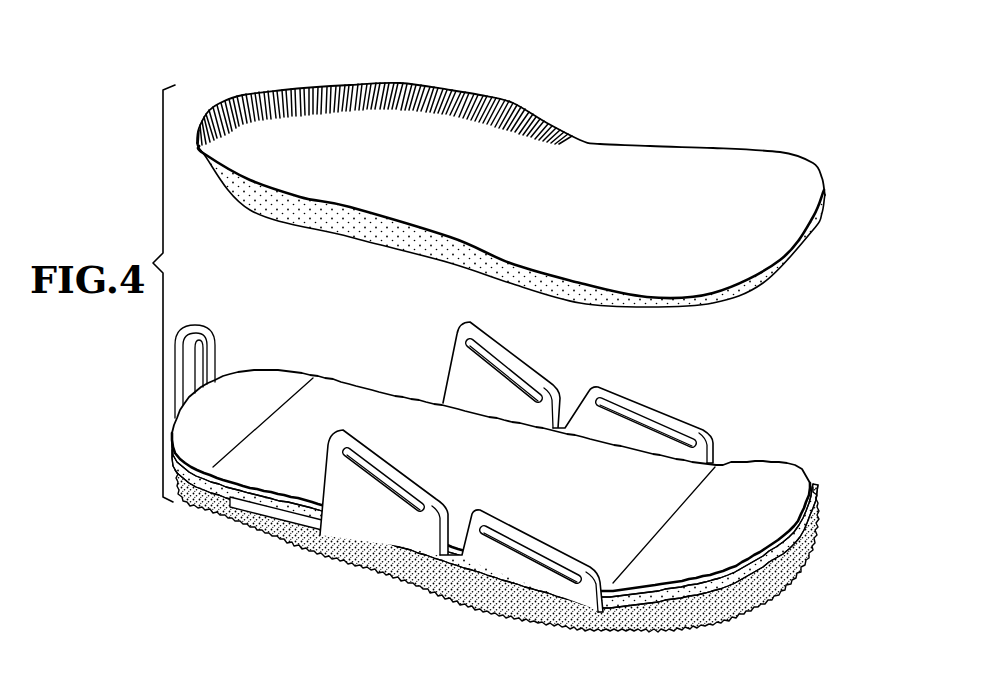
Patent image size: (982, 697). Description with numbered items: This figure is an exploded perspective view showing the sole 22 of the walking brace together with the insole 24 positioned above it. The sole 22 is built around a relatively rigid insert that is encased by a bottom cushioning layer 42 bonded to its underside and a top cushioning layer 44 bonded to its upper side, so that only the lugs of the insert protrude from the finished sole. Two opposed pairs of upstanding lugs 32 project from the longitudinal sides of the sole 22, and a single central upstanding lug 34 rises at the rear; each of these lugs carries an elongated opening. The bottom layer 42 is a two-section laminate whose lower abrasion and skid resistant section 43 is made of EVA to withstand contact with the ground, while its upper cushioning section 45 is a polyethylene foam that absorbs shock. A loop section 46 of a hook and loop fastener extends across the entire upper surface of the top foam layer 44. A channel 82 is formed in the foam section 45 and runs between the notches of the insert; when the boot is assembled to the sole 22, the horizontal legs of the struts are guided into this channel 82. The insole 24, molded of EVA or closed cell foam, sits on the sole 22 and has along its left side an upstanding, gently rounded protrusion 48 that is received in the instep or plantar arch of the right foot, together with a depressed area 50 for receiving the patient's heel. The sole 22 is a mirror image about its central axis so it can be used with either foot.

The sole 22 is at (810, 478).
The insole 24 is at (797, 157).
The upstanding lugs 32 is at (597, 390).
The central upstanding lug 34 is at (212, 337).
The bottom cushioning layer 42 is at (773, 590).
The abrasion and skid resistant section 43 is at (323, 553).
The top cushioning layer 44 is at (797, 563).
The cushioning section 45 is at (393, 560).
The loop section 46 is at (753, 473).
The protrusion 48 is at (497, 107).
The depressed area 50 is at (288, 140).
The channel 82 is at (260, 510).